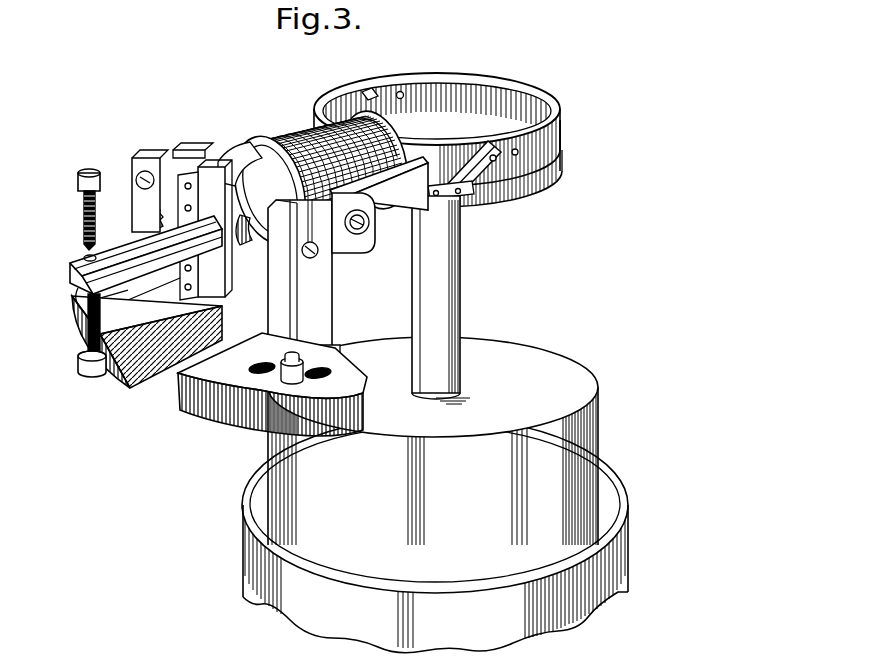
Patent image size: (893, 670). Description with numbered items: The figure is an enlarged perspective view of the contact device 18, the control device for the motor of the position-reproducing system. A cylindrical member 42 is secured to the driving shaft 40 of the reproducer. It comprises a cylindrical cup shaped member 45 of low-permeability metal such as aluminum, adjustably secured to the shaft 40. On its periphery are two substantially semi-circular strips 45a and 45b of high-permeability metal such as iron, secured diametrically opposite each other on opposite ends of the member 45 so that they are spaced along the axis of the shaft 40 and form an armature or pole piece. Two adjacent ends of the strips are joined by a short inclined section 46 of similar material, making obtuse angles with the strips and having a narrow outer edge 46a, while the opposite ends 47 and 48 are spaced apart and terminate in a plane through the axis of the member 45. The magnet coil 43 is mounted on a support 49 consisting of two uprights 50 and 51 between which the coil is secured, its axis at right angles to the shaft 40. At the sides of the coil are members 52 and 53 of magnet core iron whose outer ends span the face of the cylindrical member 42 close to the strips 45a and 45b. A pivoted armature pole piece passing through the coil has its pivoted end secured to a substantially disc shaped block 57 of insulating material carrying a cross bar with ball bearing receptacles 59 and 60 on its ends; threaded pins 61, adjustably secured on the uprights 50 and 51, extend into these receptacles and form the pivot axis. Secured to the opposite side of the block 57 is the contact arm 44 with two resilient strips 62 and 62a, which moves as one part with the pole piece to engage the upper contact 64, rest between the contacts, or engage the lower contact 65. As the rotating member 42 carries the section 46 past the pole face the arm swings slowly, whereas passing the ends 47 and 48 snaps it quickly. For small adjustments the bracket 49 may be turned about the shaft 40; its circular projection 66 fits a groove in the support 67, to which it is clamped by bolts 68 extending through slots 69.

The contact device 18 is at (578, 160).
The driving shaft 40 is at (452, 293).
The cylindrical member 42 is at (493, 97).
The magnet coil 43 is at (317, 113).
The contact arm 44 is at (70, 279).
The cup shaped member 45 is at (475, 90).
The semi-circular strip 45a is at (553, 117).
The semi-circular strip 45b is at (448, 205).
The inclined section 46 is at (463, 203).
The outer edge 46a is at (508, 195).
The strip end 47 is at (373, 90).
The strip end 48 is at (398, 92).
The support 49 is at (310, 340).
The upright 50 is at (170, 152).
The upright 51 is at (330, 262).
The magnet core member 52 is at (268, 134).
The magnet core member 53 is at (405, 205).
The disc shaped block 57 is at (236, 165).
The ball bearing receptacle 59 is at (218, 288).
The ball bearing receptacle 60 is at (146, 195).
The threaded pin 61 is at (305, 258).
The resilient strip 62 is at (118, 250).
The resilient strip 62a is at (72, 293).
The upper contact 64 is at (82, 208).
The lower contact 65 is at (82, 354).
The circular projection 66 is at (197, 353).
The support 67 is at (240, 422).
The bolt 68 is at (300, 372).
The slot 69 is at (245, 372).